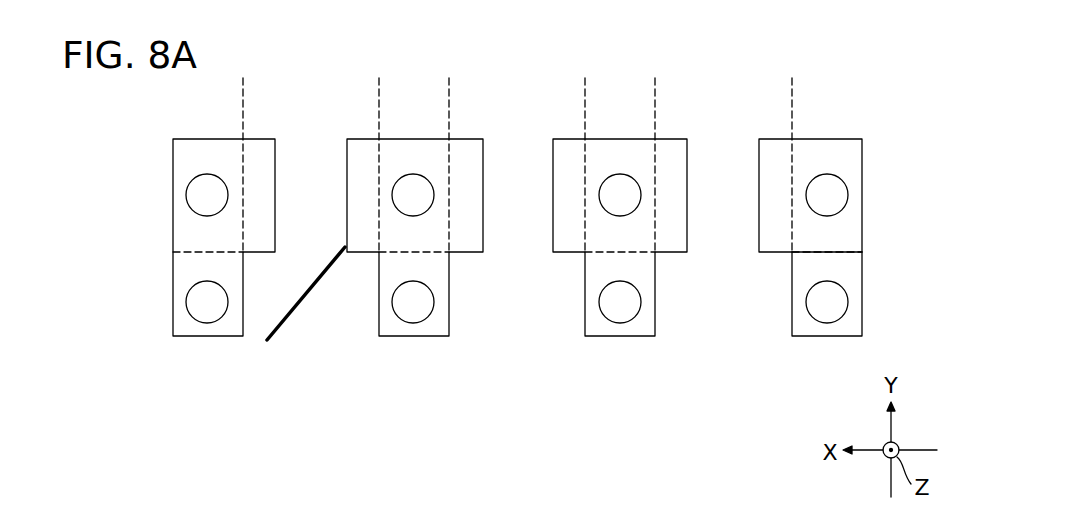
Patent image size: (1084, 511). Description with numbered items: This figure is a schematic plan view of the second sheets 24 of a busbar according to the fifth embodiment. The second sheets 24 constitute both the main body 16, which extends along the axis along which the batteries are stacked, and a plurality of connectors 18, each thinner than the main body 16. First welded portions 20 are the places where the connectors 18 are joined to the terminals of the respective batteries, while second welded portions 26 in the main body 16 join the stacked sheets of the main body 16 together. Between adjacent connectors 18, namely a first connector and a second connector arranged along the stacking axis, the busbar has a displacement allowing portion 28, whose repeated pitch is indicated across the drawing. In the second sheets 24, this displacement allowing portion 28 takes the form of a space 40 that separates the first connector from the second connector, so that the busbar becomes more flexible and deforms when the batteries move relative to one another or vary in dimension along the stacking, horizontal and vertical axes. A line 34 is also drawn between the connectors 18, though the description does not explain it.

The main body 16 is at (862, 160).
The connectors 18 is at (862, 280).
The first welded portions 20 is at (822, 323).
The second sheets 24 is at (530, 470).
The second welded portions 26 is at (826, 173).
The displacement allowing portion 28 is at (243, 94).
The cutting line 34 is at (296, 315).
The space 40 is at (275, 185).